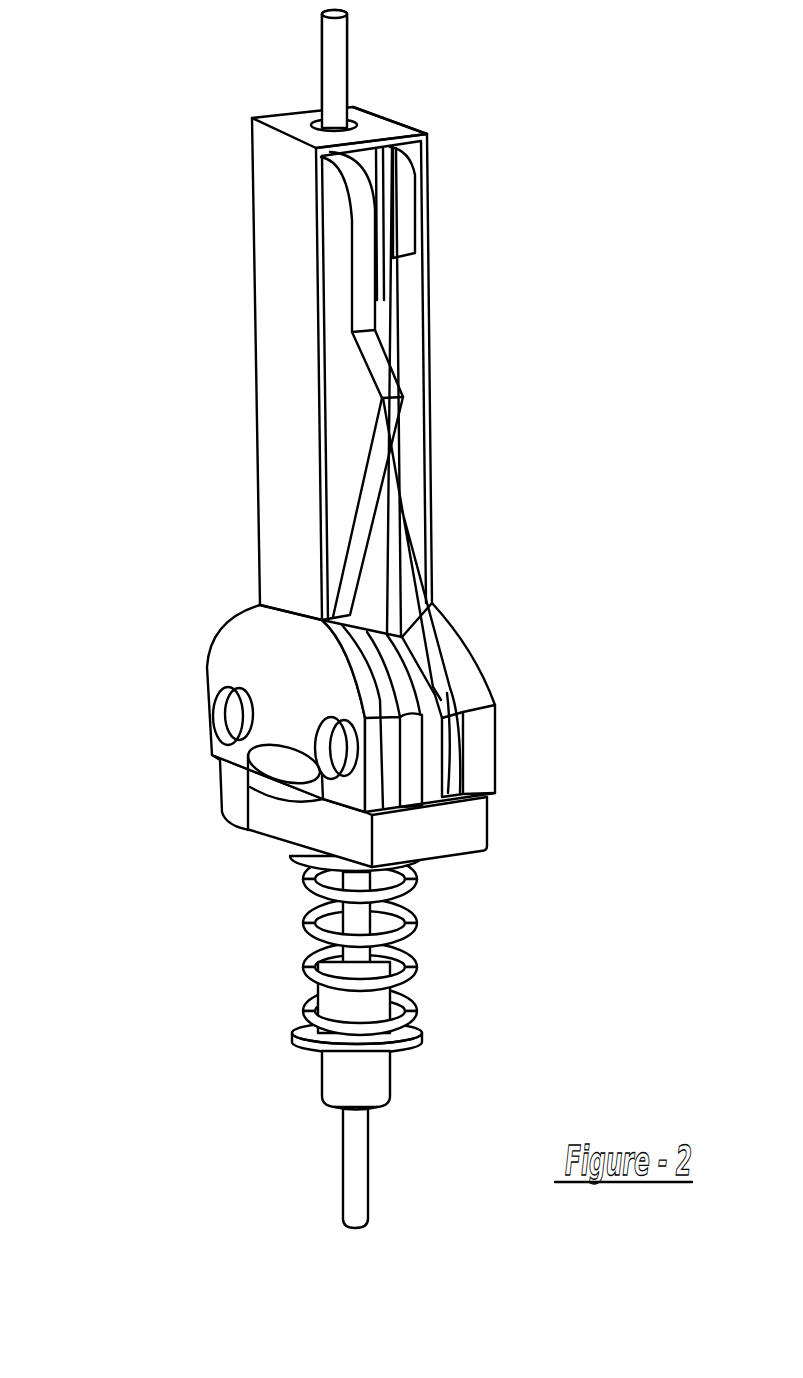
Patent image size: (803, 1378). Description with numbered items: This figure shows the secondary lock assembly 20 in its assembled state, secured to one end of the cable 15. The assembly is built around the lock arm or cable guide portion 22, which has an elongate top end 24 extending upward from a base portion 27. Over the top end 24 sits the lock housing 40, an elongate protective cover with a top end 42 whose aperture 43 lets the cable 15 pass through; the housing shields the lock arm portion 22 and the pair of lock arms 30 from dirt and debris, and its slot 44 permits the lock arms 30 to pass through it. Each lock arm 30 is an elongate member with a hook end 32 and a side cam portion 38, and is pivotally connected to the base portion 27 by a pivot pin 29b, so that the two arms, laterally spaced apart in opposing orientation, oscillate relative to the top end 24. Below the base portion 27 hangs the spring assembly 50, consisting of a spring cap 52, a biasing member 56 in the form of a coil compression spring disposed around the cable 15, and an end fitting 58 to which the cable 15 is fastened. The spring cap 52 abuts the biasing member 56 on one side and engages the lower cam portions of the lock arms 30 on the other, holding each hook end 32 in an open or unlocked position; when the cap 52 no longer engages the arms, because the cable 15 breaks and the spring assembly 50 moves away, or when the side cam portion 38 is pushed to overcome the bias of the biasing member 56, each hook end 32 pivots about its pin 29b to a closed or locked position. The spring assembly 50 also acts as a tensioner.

The cable 15 is at (337, 67).
The secondary lock assembly 20 is at (183, 201).
The lock arm or cable guide portion 22 is at (162, 710).
The elongate top end 24 is at (382, 183).
The base portion 27 is at (468, 858).
The pivot pins 29b is at (330, 740).
The lock arms 30 is at (463, 470).
The hook end 32 is at (407, 207).
The side cam portion 38 is at (377, 353).
The lock housing 40 is at (275, 362).
The top end 42 is at (363, 128).
The aperture 43 is at (313, 127).
The slot 44 is at (452, 700).
The spring assembly 50 is at (307, 972).
The spring cap 52 is at (297, 857).
The biasing member 56 is at (415, 905).
The end fitting 58 is at (320, 1063).